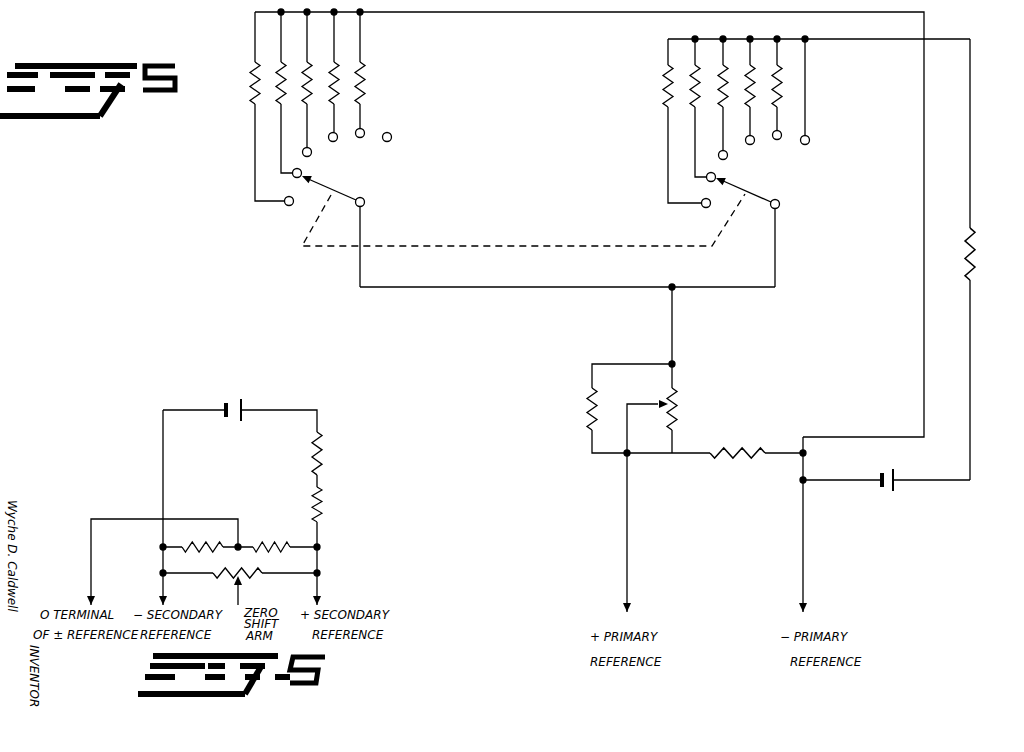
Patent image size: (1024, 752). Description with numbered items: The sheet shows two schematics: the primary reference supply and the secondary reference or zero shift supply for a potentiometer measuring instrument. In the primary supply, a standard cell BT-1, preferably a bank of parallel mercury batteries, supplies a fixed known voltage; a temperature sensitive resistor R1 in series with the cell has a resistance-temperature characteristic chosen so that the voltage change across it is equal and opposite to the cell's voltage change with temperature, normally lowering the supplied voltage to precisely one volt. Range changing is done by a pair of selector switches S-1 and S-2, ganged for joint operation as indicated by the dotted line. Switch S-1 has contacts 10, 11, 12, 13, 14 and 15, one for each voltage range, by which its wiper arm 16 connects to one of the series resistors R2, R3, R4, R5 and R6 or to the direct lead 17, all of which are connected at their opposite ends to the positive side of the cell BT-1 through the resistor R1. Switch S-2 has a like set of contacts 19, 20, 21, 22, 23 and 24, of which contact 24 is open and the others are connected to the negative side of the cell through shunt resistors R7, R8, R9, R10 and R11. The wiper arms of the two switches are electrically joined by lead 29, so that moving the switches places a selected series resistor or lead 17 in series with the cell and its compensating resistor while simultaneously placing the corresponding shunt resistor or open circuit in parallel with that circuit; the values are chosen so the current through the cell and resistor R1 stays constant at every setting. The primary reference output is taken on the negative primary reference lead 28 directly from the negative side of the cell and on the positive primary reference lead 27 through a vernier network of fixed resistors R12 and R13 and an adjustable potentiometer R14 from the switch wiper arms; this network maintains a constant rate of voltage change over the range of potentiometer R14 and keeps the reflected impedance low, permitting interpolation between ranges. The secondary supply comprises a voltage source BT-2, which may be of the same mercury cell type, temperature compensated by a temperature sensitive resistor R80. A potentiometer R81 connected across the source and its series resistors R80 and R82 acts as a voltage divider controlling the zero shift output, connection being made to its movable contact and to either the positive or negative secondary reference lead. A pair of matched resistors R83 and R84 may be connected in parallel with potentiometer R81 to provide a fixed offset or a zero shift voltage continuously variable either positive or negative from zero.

In FIG. 2, the switch contact 10 is at (706, 208).
In FIG. 2, the switch contact 11 is at (707, 180).
In FIG. 2, the switch contact 12 is at (725, 160).
In FIG. 2, the switch contact 13 is at (752, 145).
In FIG. 2, the switch contact 14 is at (776, 140).
In FIG. 2, the switch contact 15 is at (808, 144).
In FIG. 2, the switch wiper arm 16 is at (757, 200).
In FIG. 2, the lead 17 is at (807, 113).
In FIG. 2, the switch contact 19 is at (289, 206).
In FIG. 2, the switch contact 20 is at (293, 176).
In FIG. 2, the switch contact 21 is at (309, 157).
In FIG. 2, the switch contact 22 is at (335, 142).
In FIG. 2, the switch contact 23 is at (362, 138).
In FIG. 2, the open switch contact 24 is at (392, 138).
In FIG. 2, the primary reference output lead 27 is at (629, 560).
In FIG. 2, the negative primary reference terminal 28 is at (805, 560).
In FIG. 2, the lead 29 is at (481, 290).
In FIG. 2, the temperature sensitive resistor R1 is at (983, 259).
In FIG. 2, the series resistor R2 is at (672, 130).
In FIG. 2, the series resistor R3 is at (689, 117).
In FIG. 2, the series resistor R4 is at (714, 104).
In FIG. 2, the series resistor R5 is at (741, 97).
In FIG. 2, the series resistor R6 is at (768, 94).
In FIG. 2, the shunt resistor R7 is at (256, 128).
In FIG. 2, the shunt resistor R8 is at (274, 114).
In FIG. 2, the shunt resistor R9 is at (297, 102).
In FIG. 2, the shunt resistor R10 is at (323, 94).
In FIG. 2, the shunt resistor R11 is at (350, 92).
In FIG. 2, the fixed resistor R12 is at (756, 444).
In FIG. 2, the fixed resistor R13 is at (604, 405).
In FIG. 2, the adjustable potentiometer R14 is at (665, 420).
In FIG. 2, the selector switch S-1 is at (755, 230).
In FIG. 2, the selector switch S-2 is at (341, 229).
In FIG. 2, the standard cell BT-1 is at (898, 482).
In FIG. 5, the voltage source BT-2 is at (244, 409).
In FIG. 5, the temperature sensitive resistor R80 is at (332, 453).
In FIG. 5, the potentiometer R81 is at (237, 565).
In FIG. 5, the series resistor R82 is at (332, 504).
In FIG. 5, the matched resistor R83 is at (202, 539).
In FIG. 5, the matched resistor R84 is at (271, 539).